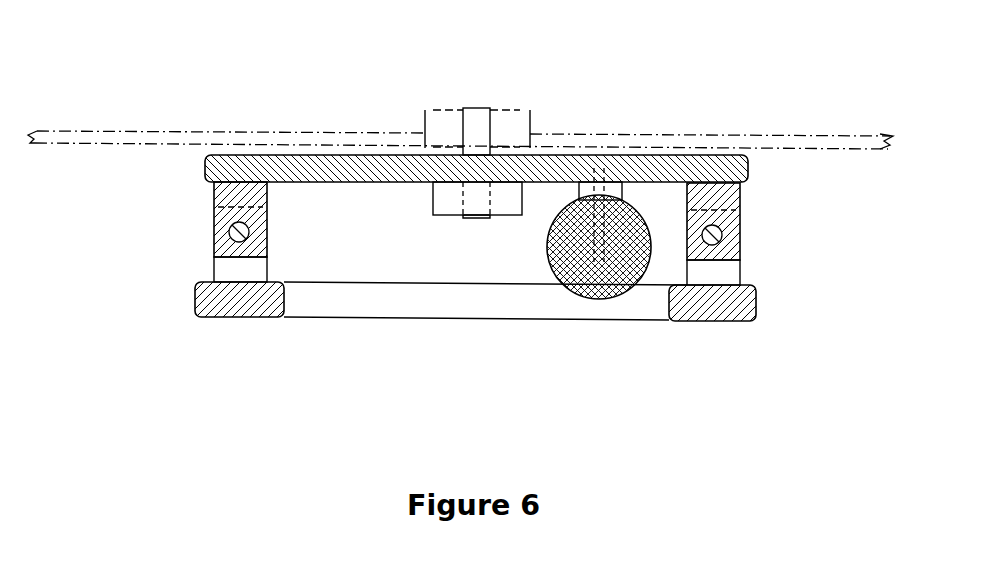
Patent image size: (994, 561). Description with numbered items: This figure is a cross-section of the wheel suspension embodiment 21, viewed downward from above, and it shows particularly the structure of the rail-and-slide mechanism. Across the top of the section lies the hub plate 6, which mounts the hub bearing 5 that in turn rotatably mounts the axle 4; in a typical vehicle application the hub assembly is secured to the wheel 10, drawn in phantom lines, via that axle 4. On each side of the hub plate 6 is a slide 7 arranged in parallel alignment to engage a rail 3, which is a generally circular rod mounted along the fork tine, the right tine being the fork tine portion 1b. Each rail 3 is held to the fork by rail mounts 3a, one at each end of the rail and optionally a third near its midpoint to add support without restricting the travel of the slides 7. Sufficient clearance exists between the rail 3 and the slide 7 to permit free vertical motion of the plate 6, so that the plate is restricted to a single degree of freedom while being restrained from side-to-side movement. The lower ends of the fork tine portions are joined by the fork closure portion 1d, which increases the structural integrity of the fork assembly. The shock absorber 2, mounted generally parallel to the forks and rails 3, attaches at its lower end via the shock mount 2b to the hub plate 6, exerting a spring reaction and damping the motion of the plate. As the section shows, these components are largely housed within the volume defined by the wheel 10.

The wheel suspension embodiment 21 is at (186, 70).
The wheel 10 is at (388, 133).
The hub plate 6 is at (333, 182).
The slide 7 is at (214, 216).
The rail 3 is at (249, 231).
The rail mount 3a is at (267, 270).
The right fork tine portion 1b is at (196, 303).
The fork closure portion 1d is at (473, 318).
The hub bearing 5 is at (443, 215).
The axle 4 is at (475, 219).
The lower shock mount 2b is at (579, 187).
The shock absorber 2 is at (607, 259).